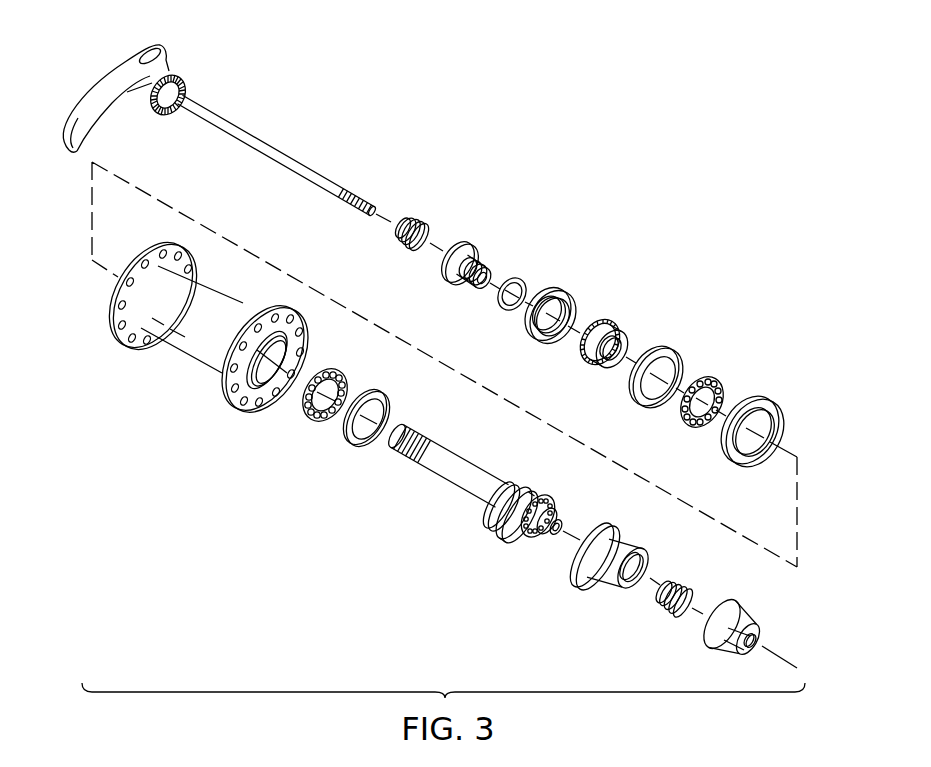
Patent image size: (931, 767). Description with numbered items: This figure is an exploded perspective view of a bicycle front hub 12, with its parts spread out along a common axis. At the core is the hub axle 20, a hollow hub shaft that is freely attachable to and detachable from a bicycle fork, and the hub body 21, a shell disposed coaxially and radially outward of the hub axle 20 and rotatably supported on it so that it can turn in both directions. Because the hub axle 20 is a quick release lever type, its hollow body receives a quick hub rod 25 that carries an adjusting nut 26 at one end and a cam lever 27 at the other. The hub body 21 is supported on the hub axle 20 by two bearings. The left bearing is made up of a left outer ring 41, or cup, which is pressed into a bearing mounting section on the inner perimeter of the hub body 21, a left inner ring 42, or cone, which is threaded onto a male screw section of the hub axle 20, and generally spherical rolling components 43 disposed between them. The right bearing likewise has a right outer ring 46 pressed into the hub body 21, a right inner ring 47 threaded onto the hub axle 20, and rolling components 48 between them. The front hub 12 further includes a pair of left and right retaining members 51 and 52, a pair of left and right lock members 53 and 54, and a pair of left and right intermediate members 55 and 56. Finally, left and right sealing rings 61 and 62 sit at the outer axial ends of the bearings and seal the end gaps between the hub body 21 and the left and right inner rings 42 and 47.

The front hub 12 is at (624, 182).
The hub axle 20 is at (448, 495).
The hub body 21 is at (176, 360).
The quick hub rod 25 is at (271, 138).
The adjusting nut 26 is at (751, 612).
The cam lever 27 is at (92, 86).
The left outer ring 41 is at (777, 397).
The left inner ring 42 is at (613, 316).
The rolling components 43 is at (720, 371).
The right outer ring 46 is at (285, 414).
The right inner ring 47 is at (488, 522).
The rolling components 48 is at (353, 376).
The left retaining member 51 is at (577, 287).
The right retaining member 52 is at (533, 479).
The left lock member 53 is at (473, 242).
The right lock member 54 is at (571, 506).
The left intermediate member 55 is at (527, 271).
The right intermediate member 56 is at (531, 552).
The left sealing ring 61 is at (680, 344).
The right sealing ring 62 is at (371, 457).